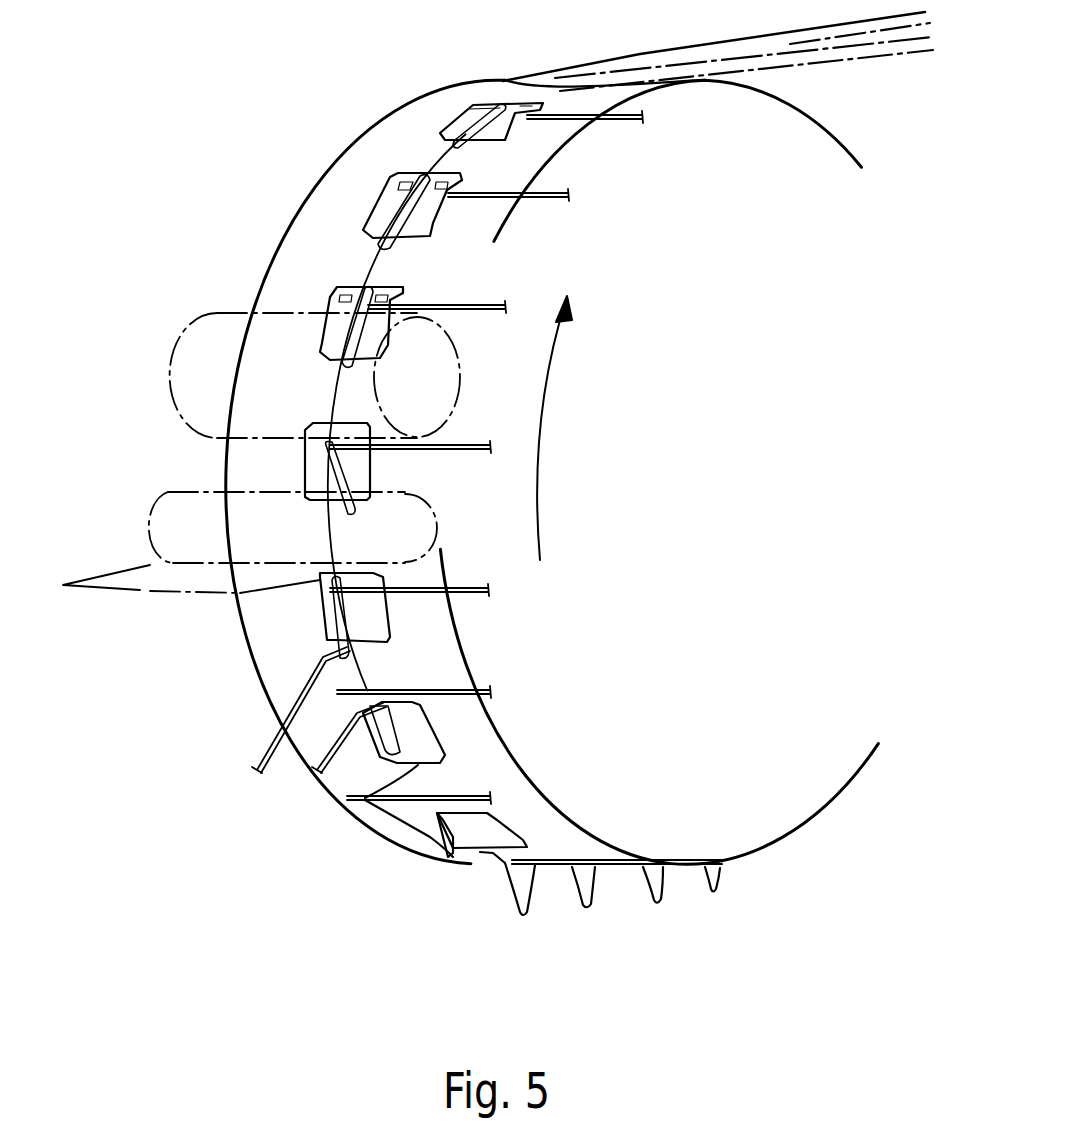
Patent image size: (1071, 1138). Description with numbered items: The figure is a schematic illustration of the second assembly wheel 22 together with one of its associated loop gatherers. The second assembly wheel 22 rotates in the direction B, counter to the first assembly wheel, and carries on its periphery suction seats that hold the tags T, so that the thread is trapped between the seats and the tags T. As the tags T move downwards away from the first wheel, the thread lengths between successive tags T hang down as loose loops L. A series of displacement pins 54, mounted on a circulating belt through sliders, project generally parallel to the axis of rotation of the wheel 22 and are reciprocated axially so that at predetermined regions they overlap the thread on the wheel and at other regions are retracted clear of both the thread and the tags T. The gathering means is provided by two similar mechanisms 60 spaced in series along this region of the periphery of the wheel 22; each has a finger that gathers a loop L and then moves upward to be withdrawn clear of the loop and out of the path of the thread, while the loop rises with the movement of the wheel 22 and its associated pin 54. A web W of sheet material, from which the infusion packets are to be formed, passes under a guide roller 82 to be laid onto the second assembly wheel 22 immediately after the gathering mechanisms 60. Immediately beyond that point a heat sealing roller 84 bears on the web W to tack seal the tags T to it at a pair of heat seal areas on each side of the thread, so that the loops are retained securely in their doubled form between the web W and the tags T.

The second assembly wheel 22 is at (807, 782).
The displacement pins 54 is at (612, 120).
The tags T is at (457, 123).
The gathering mechanisms 60 is at (326, 768).
The loose loops L is at (653, 890).
The heat sealing roller 84 is at (223, 332).
The guide roller 82 is at (188, 507).
The web W is at (138, 577).
The direction of rotation B is at (542, 438).